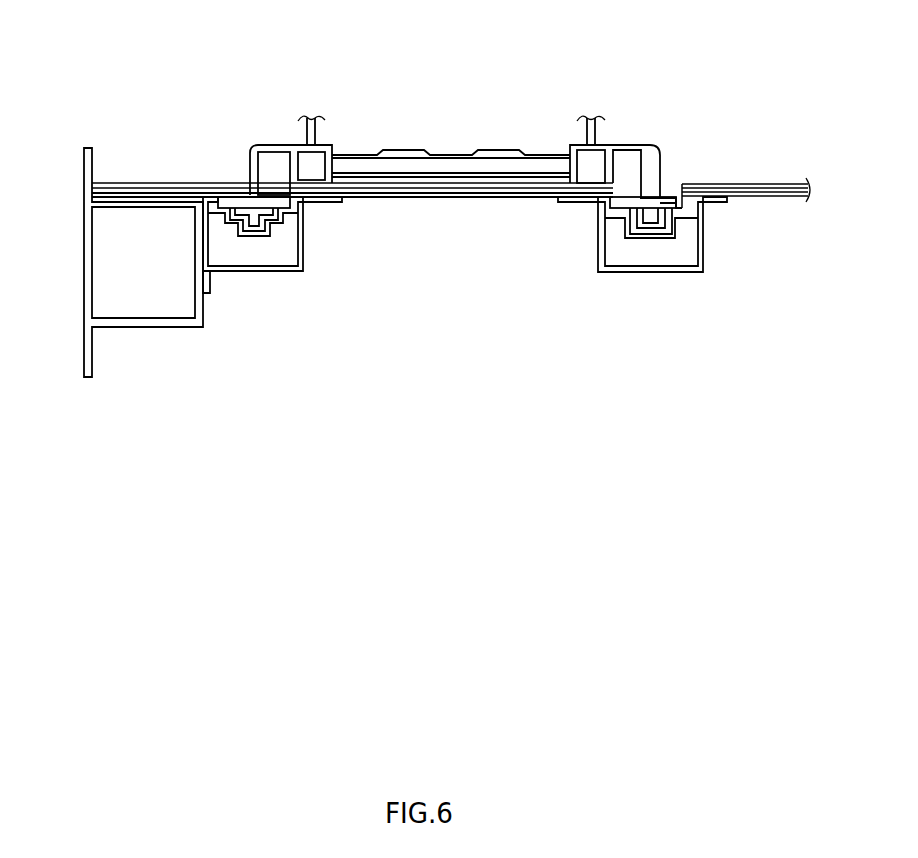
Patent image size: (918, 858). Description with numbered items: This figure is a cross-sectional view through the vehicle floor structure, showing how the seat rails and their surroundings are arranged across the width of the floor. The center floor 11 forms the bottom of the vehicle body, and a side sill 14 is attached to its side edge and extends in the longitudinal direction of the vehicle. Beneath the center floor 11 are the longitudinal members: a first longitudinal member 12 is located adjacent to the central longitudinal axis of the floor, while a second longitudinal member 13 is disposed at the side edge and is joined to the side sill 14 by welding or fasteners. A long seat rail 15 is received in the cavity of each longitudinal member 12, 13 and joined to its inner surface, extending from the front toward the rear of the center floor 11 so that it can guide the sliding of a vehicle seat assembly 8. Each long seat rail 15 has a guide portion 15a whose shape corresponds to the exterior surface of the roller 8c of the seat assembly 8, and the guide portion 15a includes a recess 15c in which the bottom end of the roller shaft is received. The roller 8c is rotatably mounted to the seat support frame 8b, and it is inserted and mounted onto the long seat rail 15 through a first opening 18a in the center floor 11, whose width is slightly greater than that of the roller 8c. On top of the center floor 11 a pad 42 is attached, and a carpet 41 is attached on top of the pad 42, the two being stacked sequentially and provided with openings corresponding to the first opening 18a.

The vehicle seat assembly 8 is at (507, 155).
The seat support frame 8b is at (657, 162).
The roller 8c is at (673, 207).
The center floor 11 is at (119, 262).
The first longitudinal member 12 is at (720, 265).
The second longitudinal member 13 is at (325, 252).
The side sill 14 is at (195, 280).
The long seat rail 15 is at (254, 232).
The guide portion 15a is at (226, 197).
The recess 15c is at (254, 222).
The first opening 18a is at (682, 183).
The carpet 41 is at (143, 185).
The pad 42 is at (92, 192).